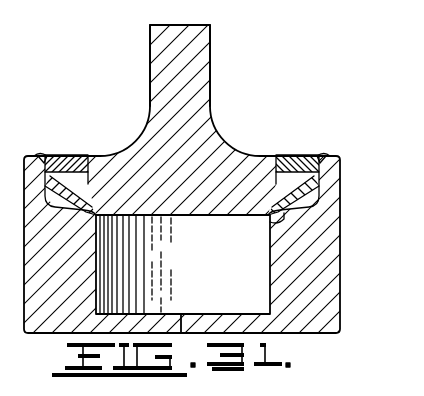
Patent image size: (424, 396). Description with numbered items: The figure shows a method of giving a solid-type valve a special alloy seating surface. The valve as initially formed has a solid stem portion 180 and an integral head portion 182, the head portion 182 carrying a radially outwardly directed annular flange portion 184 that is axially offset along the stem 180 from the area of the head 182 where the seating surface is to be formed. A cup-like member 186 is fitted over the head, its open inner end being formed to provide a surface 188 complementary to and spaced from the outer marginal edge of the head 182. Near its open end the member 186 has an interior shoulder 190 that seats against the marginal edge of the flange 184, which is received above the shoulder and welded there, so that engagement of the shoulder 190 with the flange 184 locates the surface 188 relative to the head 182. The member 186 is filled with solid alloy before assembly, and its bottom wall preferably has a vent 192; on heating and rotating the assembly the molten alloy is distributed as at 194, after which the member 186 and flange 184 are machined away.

The stem portion 180 is at (210, 62).
The head portion 182 is at (186, 216).
The annular flange portion 184 is at (293, 163).
The cup-like member 186 is at (331, 296).
The surface 188 is at (296, 220).
The shoulder 190 is at (339, 171).
The vent 192 is at (182, 330).
The molten alloy distribution 194 is at (339, 193).